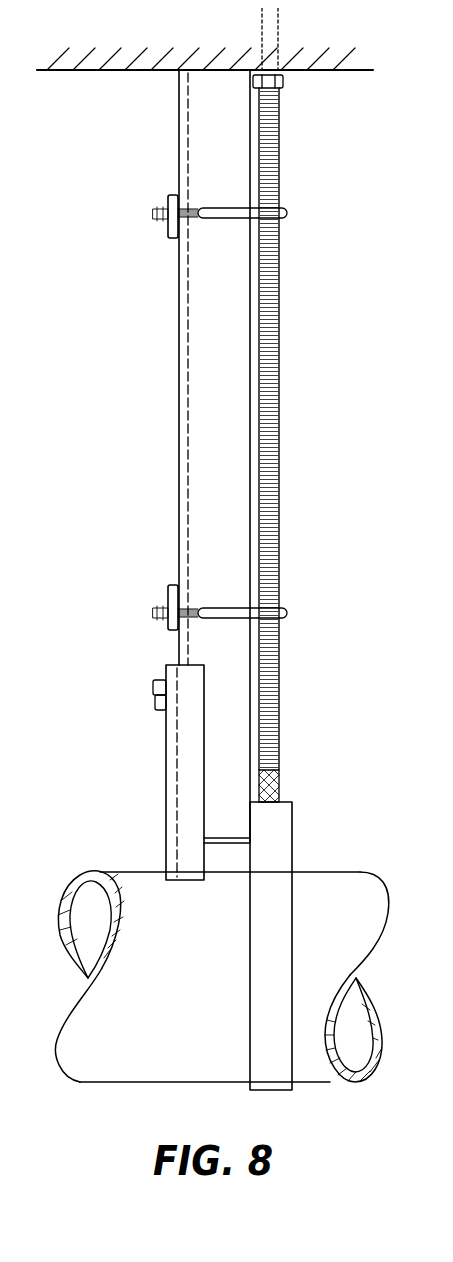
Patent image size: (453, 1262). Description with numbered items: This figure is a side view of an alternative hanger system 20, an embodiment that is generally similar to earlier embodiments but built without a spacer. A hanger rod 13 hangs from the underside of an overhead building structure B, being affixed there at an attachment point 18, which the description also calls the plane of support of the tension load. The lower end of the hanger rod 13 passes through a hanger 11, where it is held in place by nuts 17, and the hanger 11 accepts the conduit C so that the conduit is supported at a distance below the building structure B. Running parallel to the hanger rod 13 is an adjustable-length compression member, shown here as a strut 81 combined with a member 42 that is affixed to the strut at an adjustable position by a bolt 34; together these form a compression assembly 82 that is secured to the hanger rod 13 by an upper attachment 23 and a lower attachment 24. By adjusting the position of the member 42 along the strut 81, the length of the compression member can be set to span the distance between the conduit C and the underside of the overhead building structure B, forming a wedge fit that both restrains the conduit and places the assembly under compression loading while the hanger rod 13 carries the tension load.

The hanger 11 is at (293, 822).
The hanger rod 13 is at (278, 415).
The nuts 17 is at (280, 788).
The attachment point 18 is at (287, 72).
The hanger system 20 is at (211, 549).
The upper clamp bolt 23 is at (273, 220).
The lower clamp bolt 24 is at (270, 605).
The bolt 34 is at (153, 697).
The member 42 is at (175, 837).
The support bar / channel 81 is at (190, 465).
The support assembly 82 is at (196, 475).
The overhead building structure B is at (147, 70).
The conduit C is at (328, 878).